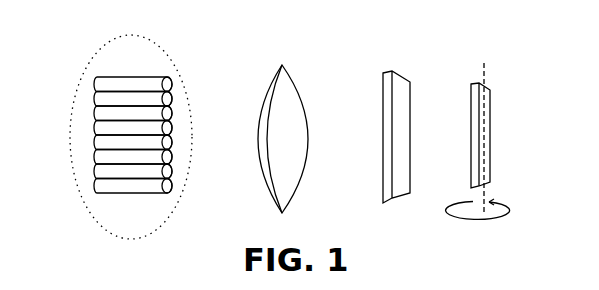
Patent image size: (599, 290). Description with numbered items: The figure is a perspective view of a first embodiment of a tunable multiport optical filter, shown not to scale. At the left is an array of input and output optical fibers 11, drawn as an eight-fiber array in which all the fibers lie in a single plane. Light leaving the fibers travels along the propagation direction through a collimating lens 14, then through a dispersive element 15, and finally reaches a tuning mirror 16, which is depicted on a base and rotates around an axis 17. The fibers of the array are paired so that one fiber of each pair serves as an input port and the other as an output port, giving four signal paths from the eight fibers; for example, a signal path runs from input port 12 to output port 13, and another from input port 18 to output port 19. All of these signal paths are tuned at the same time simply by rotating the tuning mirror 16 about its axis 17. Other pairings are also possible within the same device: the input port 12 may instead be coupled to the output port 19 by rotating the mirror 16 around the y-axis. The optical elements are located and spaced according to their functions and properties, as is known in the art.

The array of input and output optical fibers 11 is at (104, 49).
The input port 12 is at (93, 85).
The output port 13 is at (93, 186).
The collimating lens 14 is at (271, 79).
The dispersive element 15 is at (390, 70).
The tuning mirror 16 is at (477, 83).
The axis 17 is at (489, 72).
The input port 18 is at (93, 113).
The output port 19 is at (93, 158).